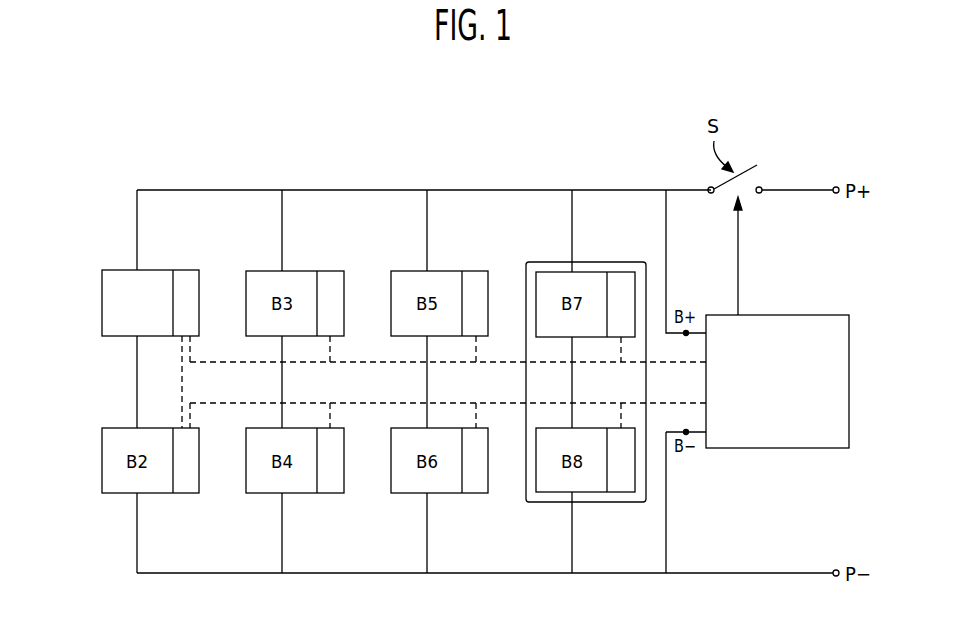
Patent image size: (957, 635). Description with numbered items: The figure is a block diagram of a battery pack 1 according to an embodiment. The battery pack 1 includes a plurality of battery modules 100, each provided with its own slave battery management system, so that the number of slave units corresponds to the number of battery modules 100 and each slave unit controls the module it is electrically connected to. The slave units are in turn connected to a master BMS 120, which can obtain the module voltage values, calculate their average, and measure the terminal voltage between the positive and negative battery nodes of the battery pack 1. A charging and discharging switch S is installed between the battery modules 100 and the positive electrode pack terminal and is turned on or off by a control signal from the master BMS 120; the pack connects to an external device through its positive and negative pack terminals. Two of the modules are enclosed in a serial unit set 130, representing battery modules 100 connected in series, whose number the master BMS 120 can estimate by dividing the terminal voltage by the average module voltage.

The battery pack 1 is at (186, 129).
The battery module 100 is at (102, 302).
The master BMS 120 is at (812, 314).
The serial unit set 130 is at (546, 504).